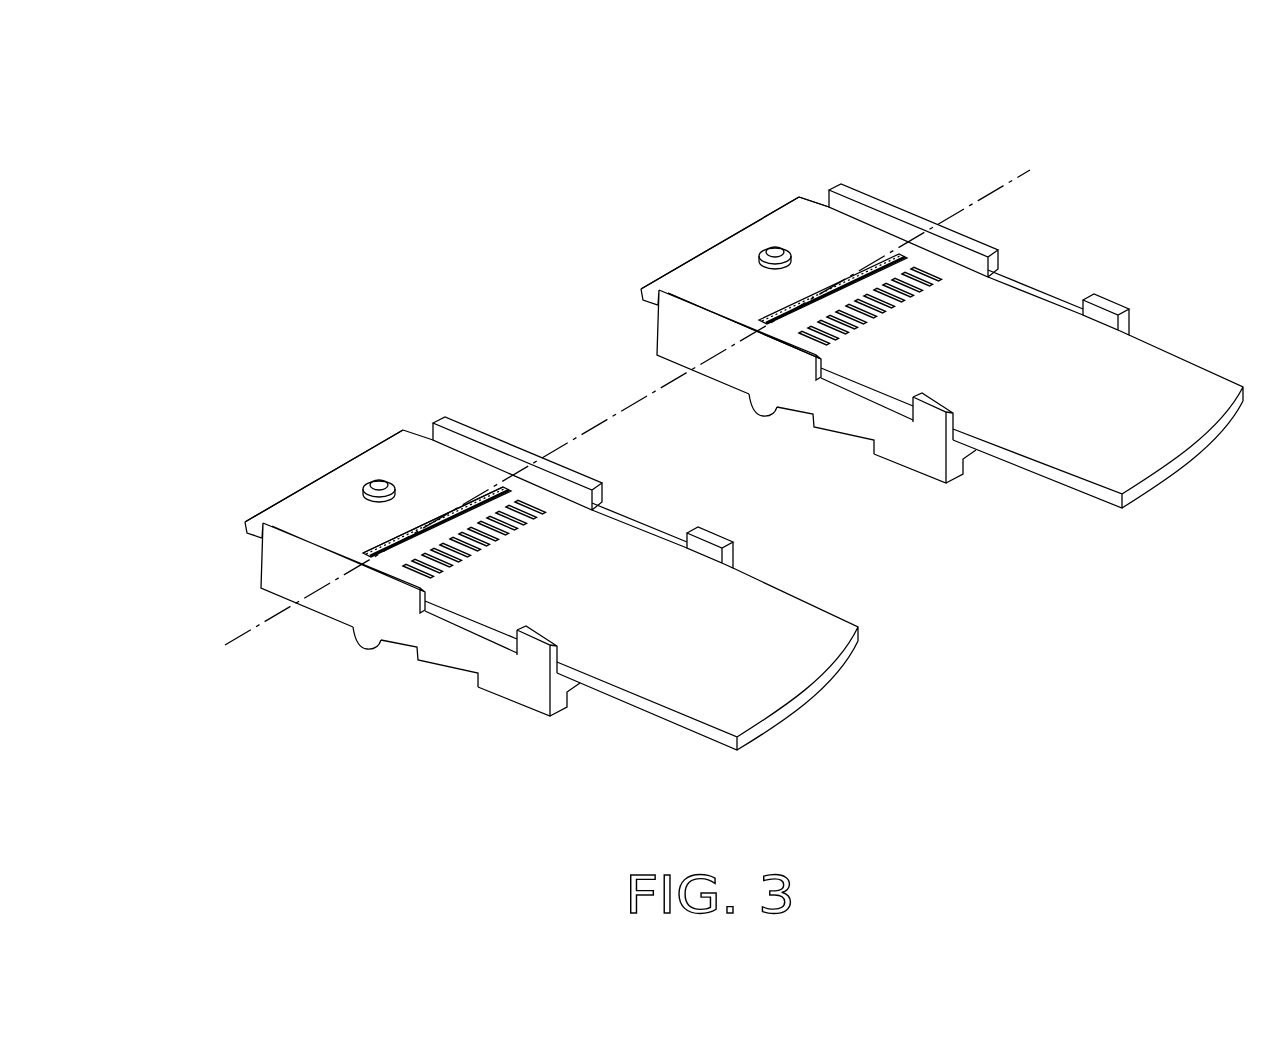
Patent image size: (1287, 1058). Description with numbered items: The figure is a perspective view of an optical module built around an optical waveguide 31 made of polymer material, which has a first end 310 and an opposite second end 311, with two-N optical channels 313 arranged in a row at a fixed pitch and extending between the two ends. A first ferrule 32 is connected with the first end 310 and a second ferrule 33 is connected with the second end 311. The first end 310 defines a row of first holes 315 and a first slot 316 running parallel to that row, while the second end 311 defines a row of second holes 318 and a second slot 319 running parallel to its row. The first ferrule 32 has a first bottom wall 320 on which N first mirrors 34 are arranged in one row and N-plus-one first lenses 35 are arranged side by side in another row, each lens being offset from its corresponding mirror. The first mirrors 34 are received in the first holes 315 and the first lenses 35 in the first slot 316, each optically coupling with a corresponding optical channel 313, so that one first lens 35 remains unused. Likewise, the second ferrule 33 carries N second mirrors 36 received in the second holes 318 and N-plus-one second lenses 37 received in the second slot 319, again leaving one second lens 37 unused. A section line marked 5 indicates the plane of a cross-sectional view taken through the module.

The optical waveguide 31 is at (770, 648).
The first end 310 is at (312, 517).
The second end 311 is at (807, 218).
The optical channels 313 is at (487, 485).
The first holes 315 is at (435, 567).
The first slot 316 is at (368, 548).
The second holes 318 is at (758, 318).
The second slot 319 is at (820, 325).
The first bottom wall 320 is at (822, 283).
The first ferrule 32 is at (467, 432).
The second ferrule 33 is at (847, 190).
The first mirrors 34 is at (537, 506).
The first lenses 35 is at (448, 500).
The second mirrors 36 is at (950, 283).
The second lenses 37 is at (843, 237).
The section line 5- 5 is at (225, 645).